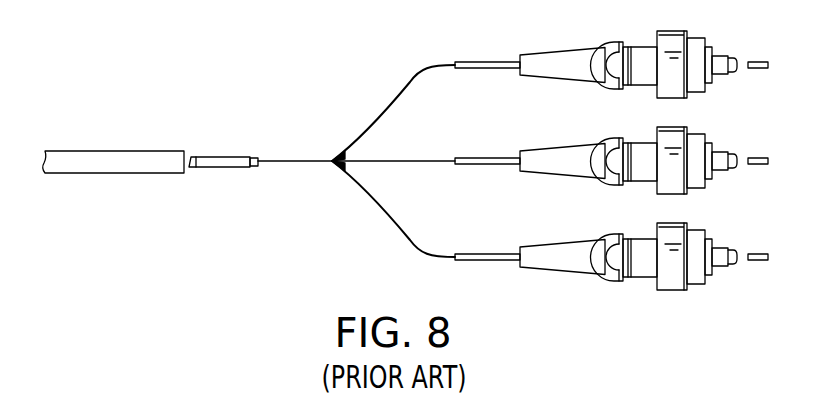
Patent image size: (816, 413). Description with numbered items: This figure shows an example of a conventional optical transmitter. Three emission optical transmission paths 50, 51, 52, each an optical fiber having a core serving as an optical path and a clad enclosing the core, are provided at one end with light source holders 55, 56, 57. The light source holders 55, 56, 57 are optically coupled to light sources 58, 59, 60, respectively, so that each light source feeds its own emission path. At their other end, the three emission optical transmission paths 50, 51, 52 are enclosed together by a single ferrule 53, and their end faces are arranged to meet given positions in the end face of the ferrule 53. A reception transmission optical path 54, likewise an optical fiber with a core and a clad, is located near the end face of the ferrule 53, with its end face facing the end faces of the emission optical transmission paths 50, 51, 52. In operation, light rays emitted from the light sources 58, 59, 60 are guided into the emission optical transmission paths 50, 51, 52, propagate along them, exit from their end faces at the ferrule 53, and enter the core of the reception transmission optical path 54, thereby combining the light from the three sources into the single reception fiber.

The emission optical transmission path 50 is at (374, 125).
The emission optical transmission path 51 is at (413, 158).
The emission optical transmission path 52 is at (370, 197).
The ferrule 53 is at (211, 157).
The reception transmission optical path 54 is at (100, 157).
The light source holder 55 is at (654, 34).
The light source holder 56 is at (654, 130).
The light source holder 57 is at (654, 226).
The light source 58 is at (759, 58).
The light source 59 is at (759, 154).
The light source 60 is at (759, 250).